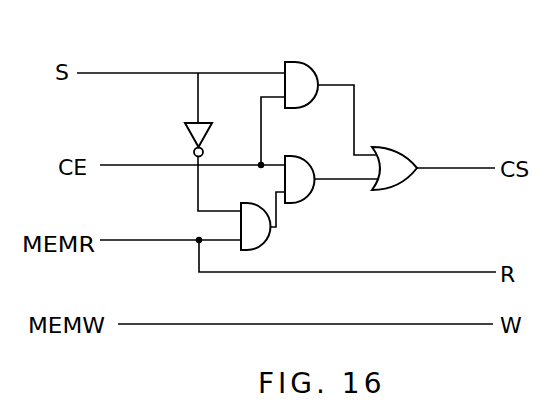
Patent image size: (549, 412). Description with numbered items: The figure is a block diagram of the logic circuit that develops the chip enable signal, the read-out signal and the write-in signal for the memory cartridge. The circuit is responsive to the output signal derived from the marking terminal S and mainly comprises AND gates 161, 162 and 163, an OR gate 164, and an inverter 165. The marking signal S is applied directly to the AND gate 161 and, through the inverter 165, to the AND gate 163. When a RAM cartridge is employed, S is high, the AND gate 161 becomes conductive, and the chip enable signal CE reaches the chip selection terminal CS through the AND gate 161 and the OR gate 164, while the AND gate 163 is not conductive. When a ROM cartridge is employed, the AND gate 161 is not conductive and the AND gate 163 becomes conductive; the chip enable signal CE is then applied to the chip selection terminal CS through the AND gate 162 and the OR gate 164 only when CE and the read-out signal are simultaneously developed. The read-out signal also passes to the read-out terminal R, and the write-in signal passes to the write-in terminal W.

The AND gate 161 is at (312, 69).
The AND gate 162 is at (308, 197).
The AND gate 163 is at (268, 234).
The OR gate 164 is at (398, 151).
The inverter 165 is at (186, 132).